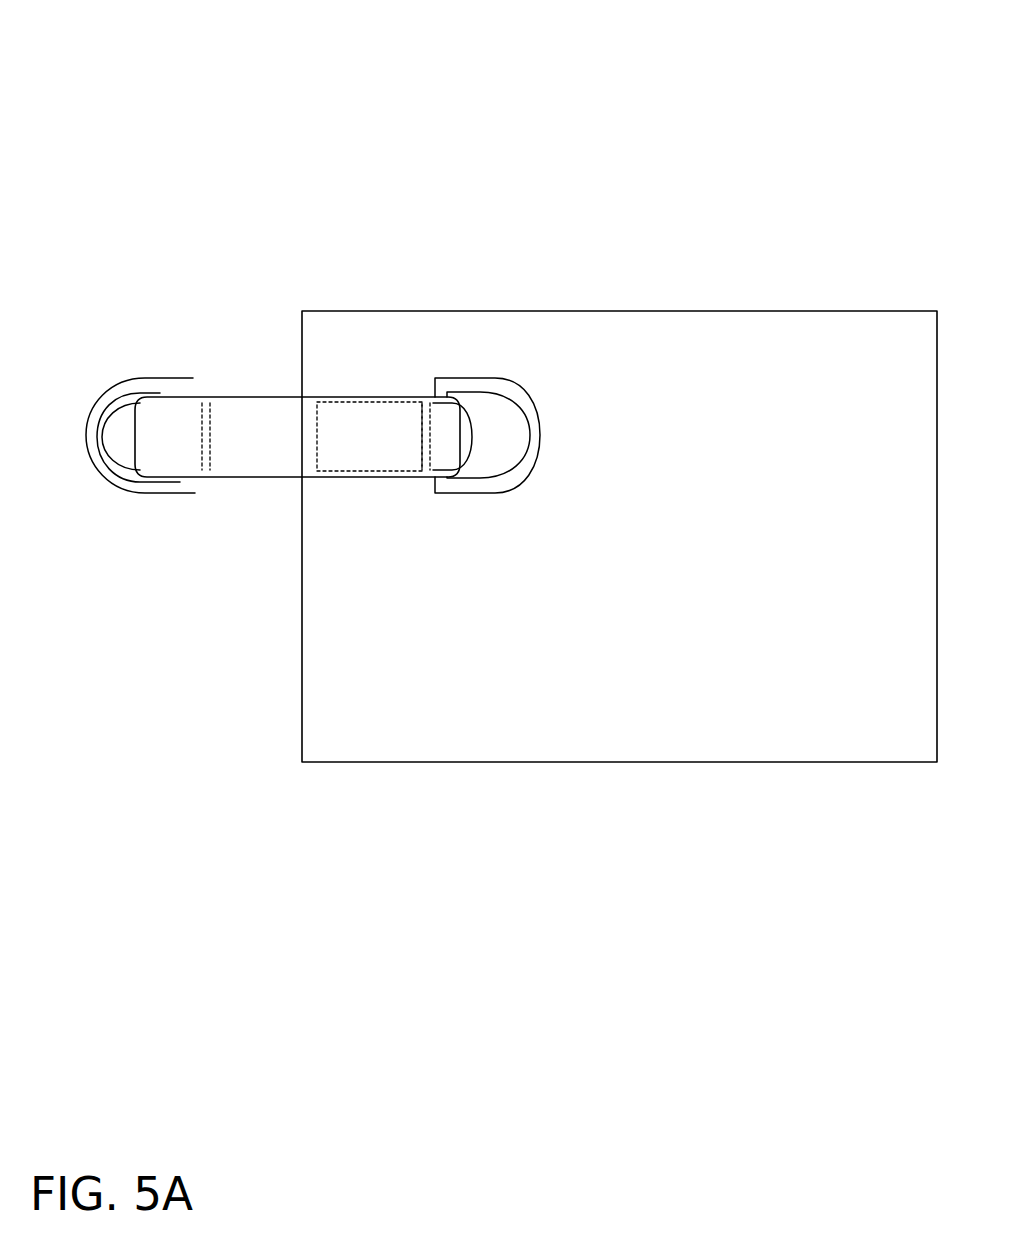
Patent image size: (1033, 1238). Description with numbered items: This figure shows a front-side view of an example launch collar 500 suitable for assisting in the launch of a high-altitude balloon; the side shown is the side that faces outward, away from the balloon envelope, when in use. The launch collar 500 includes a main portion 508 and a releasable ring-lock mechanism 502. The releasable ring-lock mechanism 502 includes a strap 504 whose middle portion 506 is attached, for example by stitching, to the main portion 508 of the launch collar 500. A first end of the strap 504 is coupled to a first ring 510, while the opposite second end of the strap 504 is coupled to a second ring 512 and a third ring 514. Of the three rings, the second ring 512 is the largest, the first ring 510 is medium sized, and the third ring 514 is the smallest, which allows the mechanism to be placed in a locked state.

The launch collar 500 is at (866, 68).
The releasable ring-lock mechanism 502 is at (217, 357).
The strap 504 is at (238, 397).
The middle portion 506 is at (378, 444).
The main portion 508 is at (713, 561).
The first ring 510 is at (540, 412).
The second ring 512 is at (158, 483).
The third ring 514 is at (108, 458).